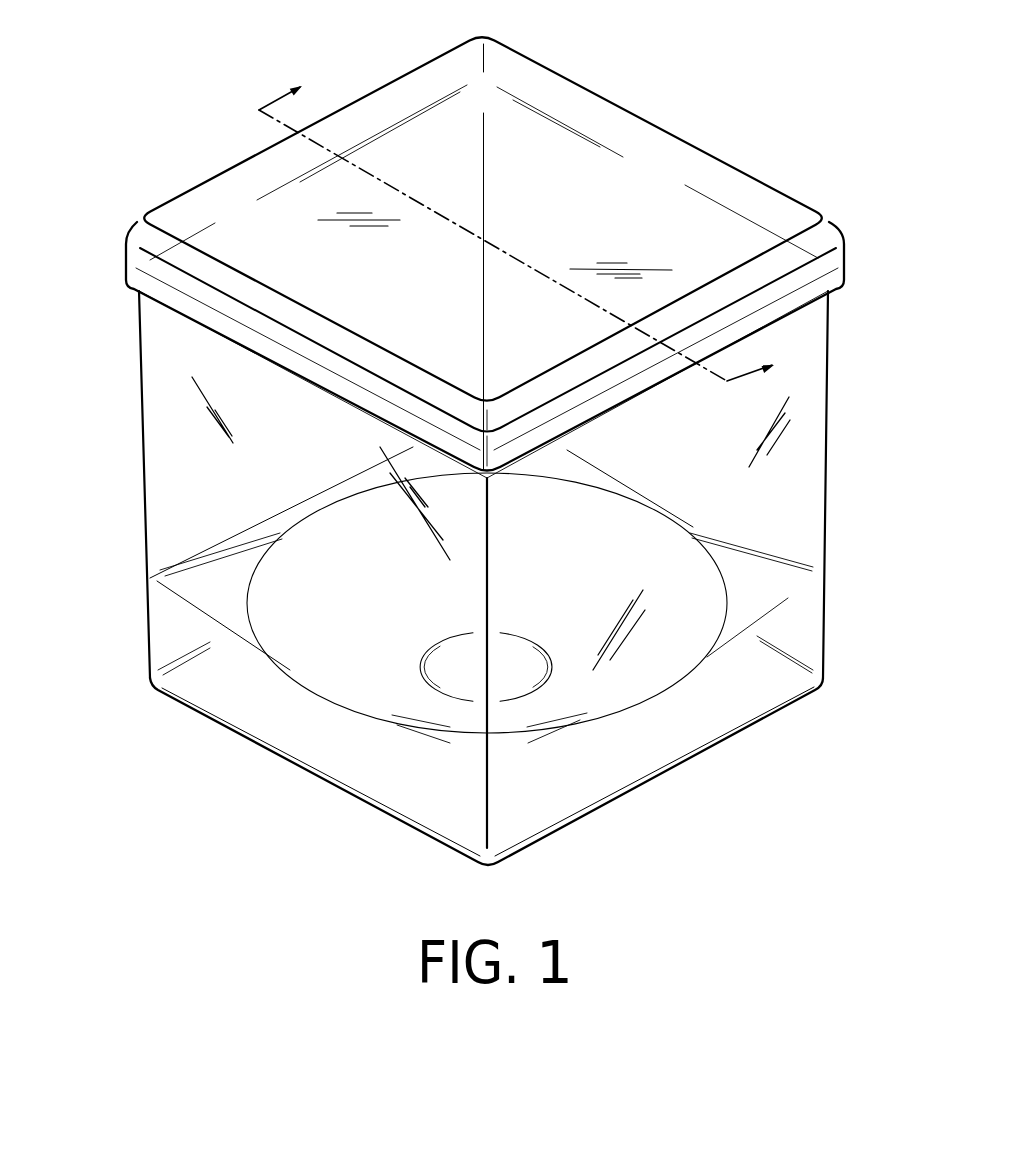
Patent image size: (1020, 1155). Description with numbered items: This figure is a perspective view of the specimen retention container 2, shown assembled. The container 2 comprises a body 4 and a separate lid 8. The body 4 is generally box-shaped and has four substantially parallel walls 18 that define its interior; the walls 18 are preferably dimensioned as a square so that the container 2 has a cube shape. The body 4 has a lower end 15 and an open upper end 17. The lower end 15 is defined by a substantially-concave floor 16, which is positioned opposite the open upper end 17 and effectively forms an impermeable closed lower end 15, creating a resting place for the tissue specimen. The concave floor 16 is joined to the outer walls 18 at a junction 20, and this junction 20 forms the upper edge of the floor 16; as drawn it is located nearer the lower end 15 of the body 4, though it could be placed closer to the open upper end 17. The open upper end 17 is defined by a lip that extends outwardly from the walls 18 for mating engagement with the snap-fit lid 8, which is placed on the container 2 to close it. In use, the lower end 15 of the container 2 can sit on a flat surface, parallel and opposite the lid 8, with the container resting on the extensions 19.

The specimen retention container 2 is at (216, 63).
The body 4 is at (813, 458).
The lid 8 is at (657, 140).
The lower end 15 is at (317, 773).
The substantially-concave floor 16 is at (683, 635).
The open upper end 17 is at (110, 225).
The walls 18 is at (141, 405).
The extensions 19 is at (693, 730).
The junction 20 is at (153, 576).